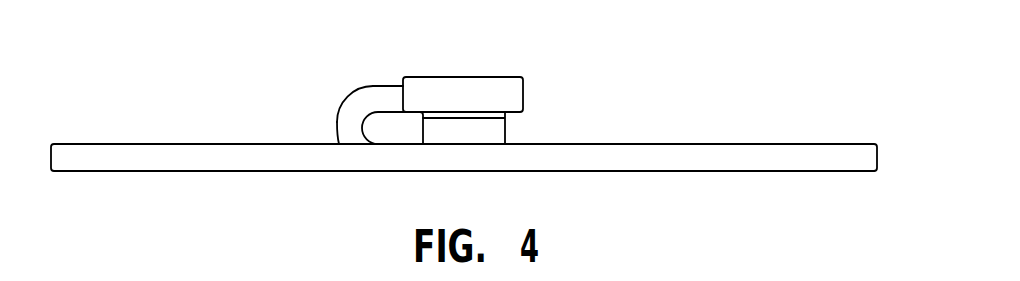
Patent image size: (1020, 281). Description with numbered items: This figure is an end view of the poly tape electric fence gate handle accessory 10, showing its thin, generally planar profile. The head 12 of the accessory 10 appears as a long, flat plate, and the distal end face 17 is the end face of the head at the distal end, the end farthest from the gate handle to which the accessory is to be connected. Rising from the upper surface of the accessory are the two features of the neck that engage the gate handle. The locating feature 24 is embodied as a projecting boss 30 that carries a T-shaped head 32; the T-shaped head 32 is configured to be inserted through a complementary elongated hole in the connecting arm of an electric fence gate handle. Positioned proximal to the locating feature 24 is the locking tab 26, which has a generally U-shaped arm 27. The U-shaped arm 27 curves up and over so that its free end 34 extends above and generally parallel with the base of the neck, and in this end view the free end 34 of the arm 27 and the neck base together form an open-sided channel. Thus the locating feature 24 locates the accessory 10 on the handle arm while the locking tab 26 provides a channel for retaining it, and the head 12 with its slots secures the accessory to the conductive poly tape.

The poly tape accessory 10 is at (705, 135).
The head 12 is at (197, 173).
The distal end face 17 is at (655, 163).
The locating feature 24 is at (532, 73).
The locking tab 26 is at (344, 81).
The U-shaped arm 27 is at (341, 112).
The projecting boss 30 is at (508, 132).
The T-shaped head 32 is at (524, 90).
The free end 34 is at (391, 85).